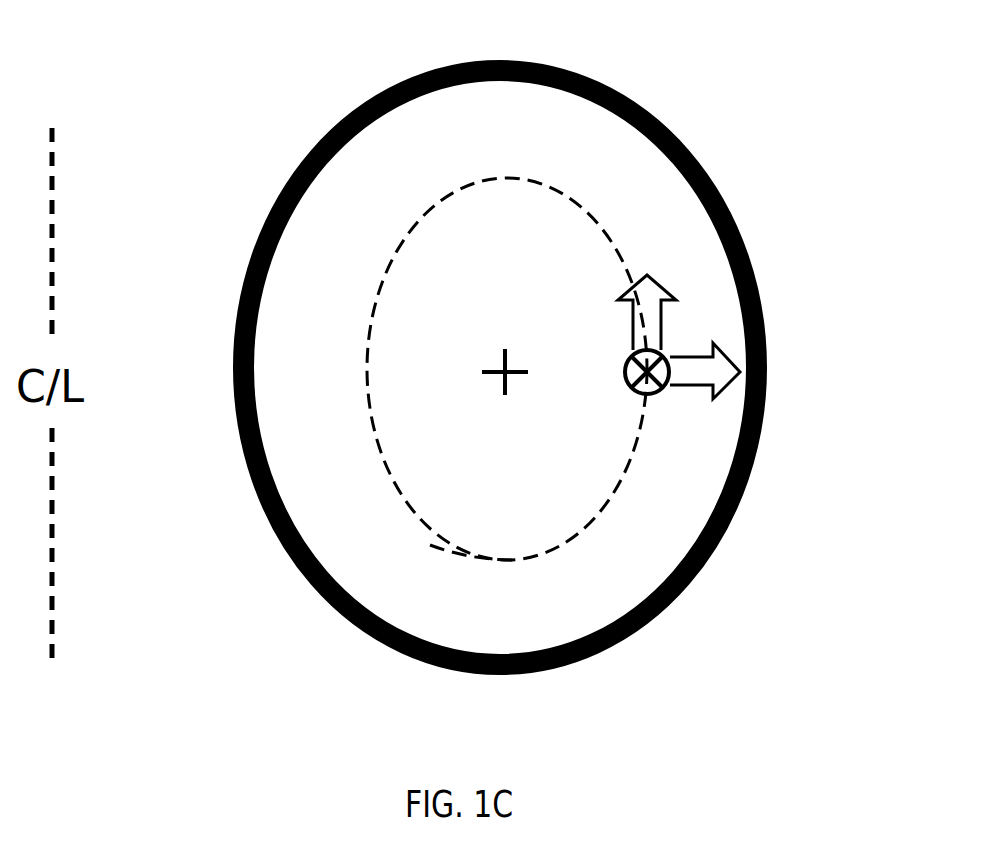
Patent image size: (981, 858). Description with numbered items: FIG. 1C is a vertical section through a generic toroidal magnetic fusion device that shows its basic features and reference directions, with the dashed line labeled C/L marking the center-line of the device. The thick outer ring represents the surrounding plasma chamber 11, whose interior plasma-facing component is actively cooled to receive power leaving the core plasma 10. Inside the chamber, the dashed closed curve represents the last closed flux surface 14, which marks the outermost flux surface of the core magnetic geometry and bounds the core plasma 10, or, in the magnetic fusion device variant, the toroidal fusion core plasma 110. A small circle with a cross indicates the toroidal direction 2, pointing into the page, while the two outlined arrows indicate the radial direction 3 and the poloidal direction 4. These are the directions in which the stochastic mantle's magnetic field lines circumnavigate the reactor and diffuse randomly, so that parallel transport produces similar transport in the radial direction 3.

The toroidal direction 2 is at (658, 392).
The radial direction 3 is at (715, 367).
The poloidal direction 4 is at (647, 312).
The core plasma 10 is at (601, 332).
The toroidal fusion core plasma 110 is at (497, 238).
The surrounding plasma chamber 11 is at (615, 92).
The last closed flux surface 14 is at (480, 558).